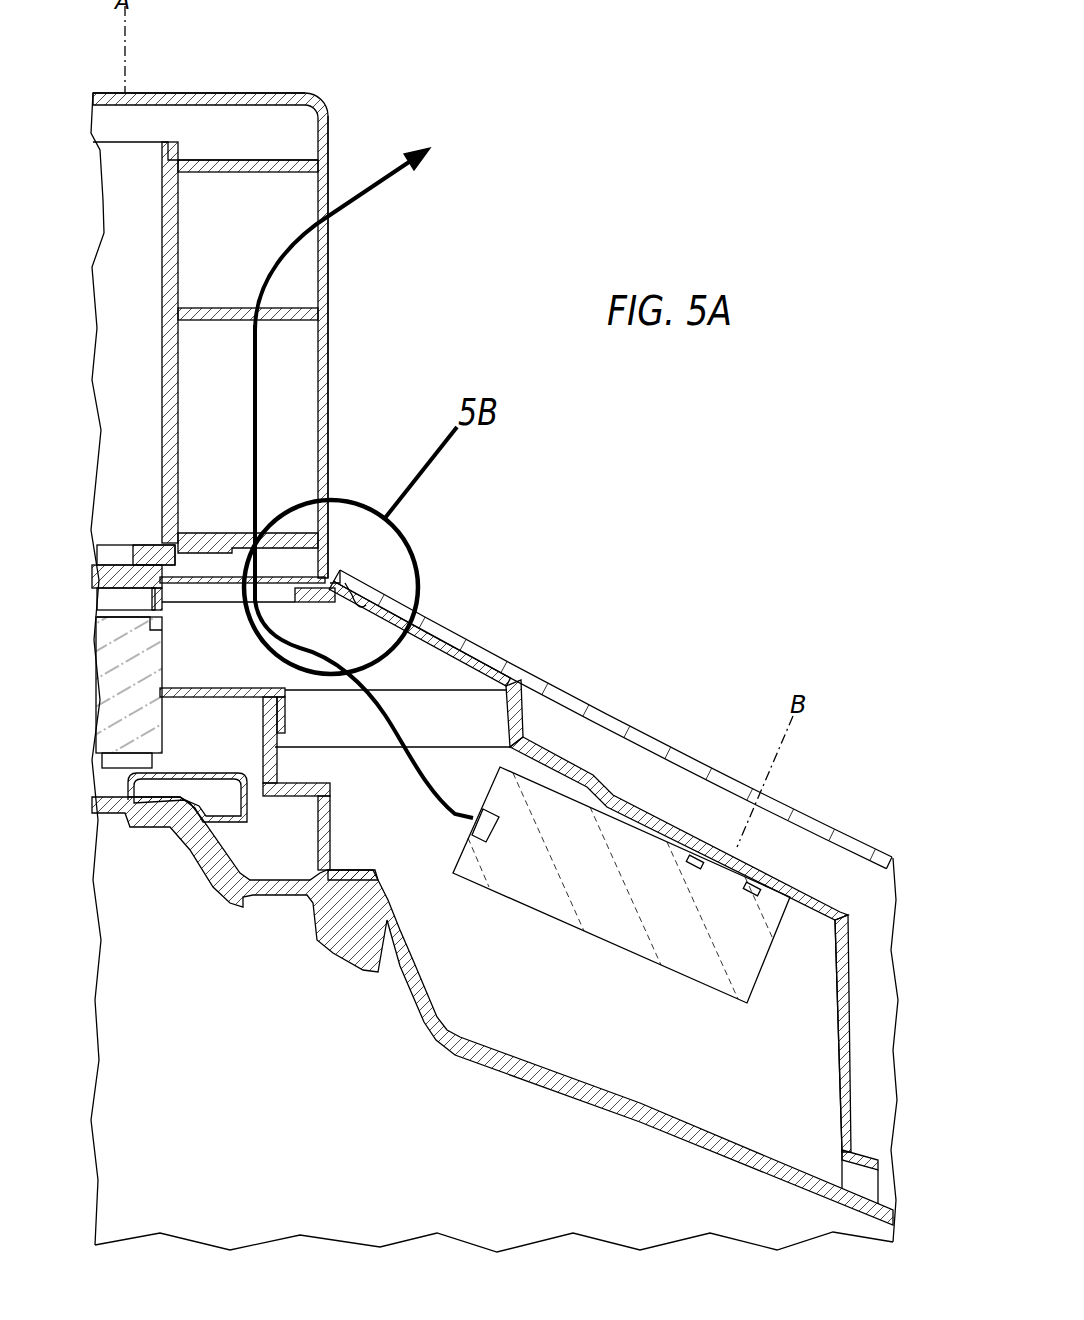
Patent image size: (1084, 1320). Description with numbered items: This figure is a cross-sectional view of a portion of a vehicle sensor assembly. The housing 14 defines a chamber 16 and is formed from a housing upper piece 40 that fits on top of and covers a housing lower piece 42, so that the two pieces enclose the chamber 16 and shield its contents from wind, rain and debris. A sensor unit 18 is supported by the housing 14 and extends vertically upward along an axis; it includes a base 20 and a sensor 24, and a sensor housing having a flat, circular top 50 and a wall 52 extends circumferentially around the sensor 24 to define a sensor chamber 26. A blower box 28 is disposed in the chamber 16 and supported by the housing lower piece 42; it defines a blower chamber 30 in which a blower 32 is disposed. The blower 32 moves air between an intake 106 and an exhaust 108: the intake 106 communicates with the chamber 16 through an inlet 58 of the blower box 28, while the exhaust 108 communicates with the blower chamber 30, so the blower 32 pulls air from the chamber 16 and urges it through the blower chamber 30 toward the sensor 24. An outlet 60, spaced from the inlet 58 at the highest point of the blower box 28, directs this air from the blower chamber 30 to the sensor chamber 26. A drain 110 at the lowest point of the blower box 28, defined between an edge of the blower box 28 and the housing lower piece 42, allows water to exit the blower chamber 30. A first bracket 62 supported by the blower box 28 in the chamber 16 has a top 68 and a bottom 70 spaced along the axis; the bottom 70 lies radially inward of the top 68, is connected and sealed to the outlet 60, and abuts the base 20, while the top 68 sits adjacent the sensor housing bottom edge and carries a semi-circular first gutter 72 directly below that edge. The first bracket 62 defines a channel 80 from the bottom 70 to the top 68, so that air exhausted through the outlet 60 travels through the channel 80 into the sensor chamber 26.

The housing 14 is at (662, 725).
The chamber 16 is at (825, 865).
The sensor unit 18 is at (330, 107).
The base 20 is at (157, 725).
The sensor 24 is at (180, 383).
The sensor chamber 26 is at (283, 425).
The blower box 28 is at (850, 1007).
The blower chamber 30 is at (807, 1083).
The blower 32 is at (767, 962).
The housing upper piece 40 is at (785, 793).
The housing lower piece 42 is at (590, 1098).
The top 50 is at (210, 93).
The wall 52 is at (330, 255).
The inlet 58 is at (768, 850).
The outlet 60 is at (473, 720).
The first bracket 62 is at (535, 713).
The top 68 is at (370, 610).
The bottom 70 is at (197, 698).
The first gutter 72 is at (331, 577).
The channel 80 is at (357, 638).
The intake 106 is at (752, 897).
The exhaust 108 is at (490, 833).
The drain 110 is at (878, 1186).